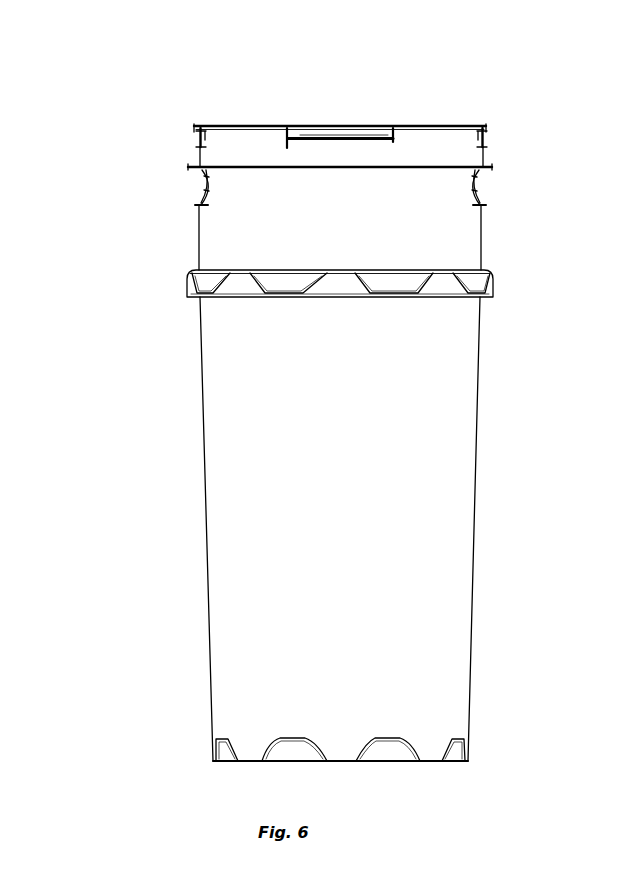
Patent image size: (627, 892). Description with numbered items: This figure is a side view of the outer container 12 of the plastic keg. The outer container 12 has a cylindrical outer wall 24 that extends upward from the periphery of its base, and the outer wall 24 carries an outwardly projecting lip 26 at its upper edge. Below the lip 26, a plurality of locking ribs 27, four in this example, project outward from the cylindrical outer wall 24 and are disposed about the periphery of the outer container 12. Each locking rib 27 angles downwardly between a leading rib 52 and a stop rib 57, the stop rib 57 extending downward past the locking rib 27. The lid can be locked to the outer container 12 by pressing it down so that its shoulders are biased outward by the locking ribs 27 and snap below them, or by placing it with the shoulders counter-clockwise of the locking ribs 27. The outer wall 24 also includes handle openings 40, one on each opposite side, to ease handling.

The outer container 12 is at (138, 131).
The cylindrical outer wall 24 is at (477, 399).
The outwardly projecting lip 26 is at (487, 127).
The locking ribs 27 is at (196, 138).
The handle openings 40 is at (198, 205).
The leading rib 52 is at (407, 126).
The stop rib 57 is at (286, 137).